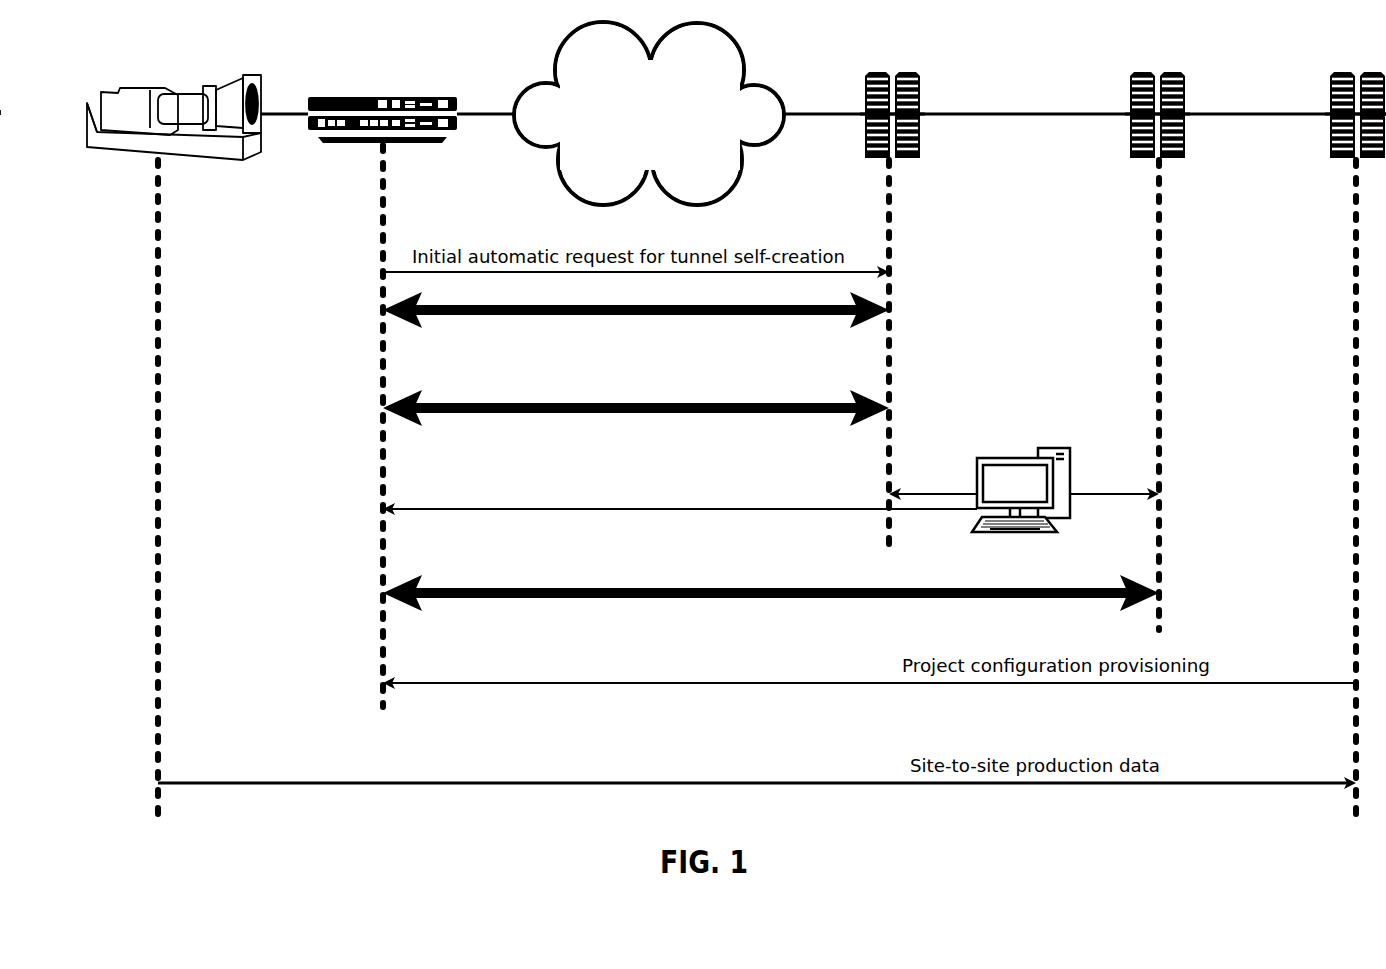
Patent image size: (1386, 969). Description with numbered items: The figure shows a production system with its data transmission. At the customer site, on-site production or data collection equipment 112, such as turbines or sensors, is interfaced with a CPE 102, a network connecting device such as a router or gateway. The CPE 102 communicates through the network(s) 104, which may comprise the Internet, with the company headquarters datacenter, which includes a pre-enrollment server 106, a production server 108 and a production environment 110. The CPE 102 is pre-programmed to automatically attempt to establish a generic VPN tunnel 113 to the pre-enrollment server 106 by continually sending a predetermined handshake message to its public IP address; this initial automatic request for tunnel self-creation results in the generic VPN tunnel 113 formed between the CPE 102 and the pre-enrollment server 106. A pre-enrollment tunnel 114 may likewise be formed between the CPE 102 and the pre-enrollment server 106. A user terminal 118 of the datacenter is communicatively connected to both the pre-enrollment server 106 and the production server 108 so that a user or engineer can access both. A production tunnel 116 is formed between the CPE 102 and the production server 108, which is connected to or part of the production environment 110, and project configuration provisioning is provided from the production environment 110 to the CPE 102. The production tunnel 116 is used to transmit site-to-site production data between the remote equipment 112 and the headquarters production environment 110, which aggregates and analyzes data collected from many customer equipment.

The CPE 102 is at (345, 148).
The network(s) 104 is at (527, 150).
The pre-enrollment server 106 is at (865, 155).
The production server 108 is at (1130, 155).
The production environment 110 is at (1330, 155).
The on-site production or data collection equipment 112 is at (135, 148).
The generic VPN tunnel 113 is at (637, 318).
The pre-enrollment tunnel 114 is at (592, 416).
The production tunnel 116 is at (605, 598).
The user terminal 118 is at (1018, 457).